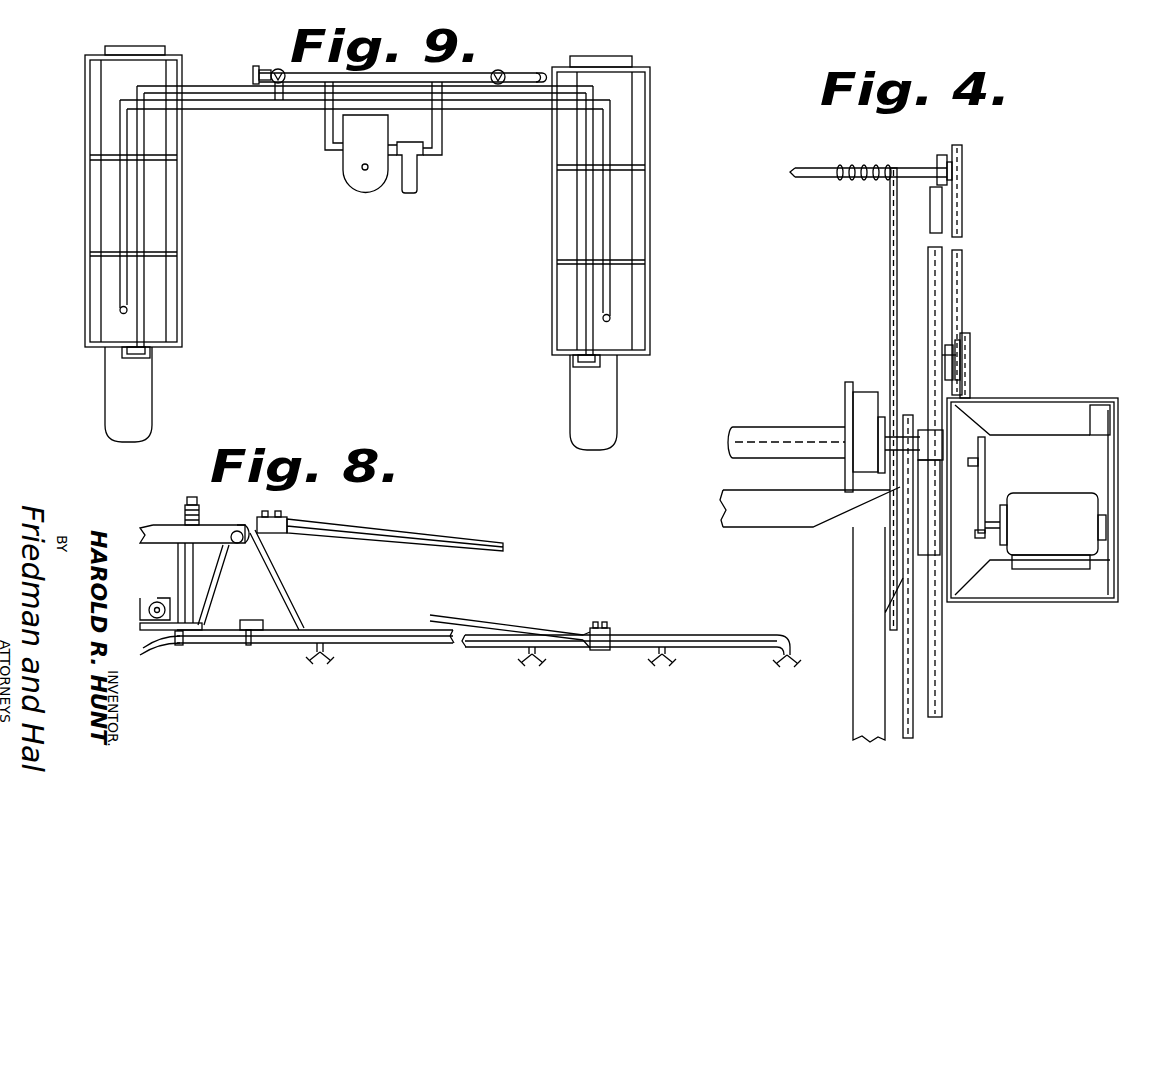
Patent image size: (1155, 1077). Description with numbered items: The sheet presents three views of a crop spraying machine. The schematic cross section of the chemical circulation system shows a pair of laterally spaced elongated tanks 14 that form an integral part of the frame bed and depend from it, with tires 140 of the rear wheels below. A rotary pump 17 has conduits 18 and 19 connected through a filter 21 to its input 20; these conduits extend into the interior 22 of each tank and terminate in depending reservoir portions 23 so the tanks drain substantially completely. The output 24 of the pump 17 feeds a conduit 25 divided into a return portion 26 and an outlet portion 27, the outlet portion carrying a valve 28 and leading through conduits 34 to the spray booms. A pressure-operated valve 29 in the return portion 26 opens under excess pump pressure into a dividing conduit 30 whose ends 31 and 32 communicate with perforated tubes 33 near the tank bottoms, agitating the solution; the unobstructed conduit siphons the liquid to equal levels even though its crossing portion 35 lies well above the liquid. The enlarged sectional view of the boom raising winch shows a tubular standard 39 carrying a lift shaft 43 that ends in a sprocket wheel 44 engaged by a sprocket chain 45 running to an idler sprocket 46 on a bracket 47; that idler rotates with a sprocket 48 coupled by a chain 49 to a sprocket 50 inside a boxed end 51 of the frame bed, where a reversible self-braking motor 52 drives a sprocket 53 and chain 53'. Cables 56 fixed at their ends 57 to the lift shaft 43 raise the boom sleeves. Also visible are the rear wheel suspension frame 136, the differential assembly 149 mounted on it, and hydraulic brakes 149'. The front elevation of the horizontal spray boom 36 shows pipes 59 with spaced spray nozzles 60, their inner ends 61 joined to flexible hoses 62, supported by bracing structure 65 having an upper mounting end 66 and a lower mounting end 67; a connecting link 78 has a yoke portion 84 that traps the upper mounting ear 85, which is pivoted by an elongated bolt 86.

In FIG. 9, the tank 14 is at (85, 218).
In FIG. 9, the rotary pump 17 is at (352, 168).
In FIG. 9, the conduit 18 is at (590, 207).
In FIG. 9, the conduit 19 is at (138, 210).
In FIG. 9, the pump input 20 is at (394, 158).
In FIG. 9, the filter 21 is at (416, 175).
In FIG. 9, the tank interior 22 is at (172, 284).
In FIG. 9, the reservoir portion 23 is at (142, 368).
In FIG. 9, the pump output 24 is at (335, 150).
In FIG. 9, the conduit 25 is at (318, 74).
In FIG. 9, the return portion 26 is at (257, 71).
In FIG. 9, the outlet portion 27 is at (466, 72).
In FIG. 9, the valve 28 is at (525, 72).
In FIG. 9, the pressure-operated valve 29 is at (274, 68).
In FIG. 9, the dividing conduit 30 is at (283, 105).
In FIG. 9, the end of dividing conduit 31 is at (120, 311).
In FIG. 9, the end of dividing conduit 32 is at (608, 318).
In FIG. 9, the perforated tube 33 is at (120, 308).
In FIG. 9, the conduit 34 is at (580, 62).
In FIG. 9, the crossing portion 35 is at (475, 109).
In FIG. 9, the tire 140 is at (105, 422).
In FIG. 4, the lift shaft 43 is at (917, 166).
In FIG. 4, the sprocket wheel 44 is at (962, 170).
In FIG. 4, the sprocket chain 45 is at (962, 270).
In FIG. 4, the idler sprocket 46 is at (950, 345).
In FIG. 4, the bracket 47 is at (945, 412).
In FIG. 4, the sprocket 48 is at (968, 352).
In FIG. 4, the chain 49 is at (965, 335).
In FIG. 4, the sprocket 50 is at (986, 462).
In FIG. 4, the boxed end 51 is at (1070, 405).
In FIG. 4, the motor 52 is at (1050, 505).
In FIG. 4, the sprocket 53 is at (1001, 557).
In FIG. 4, the chain 53' is at (1007, 485).
In FIG. 4, the cable 56 is at (890, 266).
In FIG. 4, the cable end 57 is at (845, 173).
In FIG. 4, the rear wheel suspension frame 136 is at (872, 578).
In FIG. 4, the differential assembly 149 is at (786, 424).
In FIG. 4, the hydraulic brake 149' is at (856, 420).
In FIG. 4, the standard 39 is at (935, 305).
In FIG. 8, the spray boom 36 is at (380, 532).
In FIG. 8, the pipe 59 is at (395, 645).
In FIG. 8, the spray nozzle 60 is at (785, 665).
In FIG. 8, the inner end 61 is at (178, 640).
In FIG. 8, the flexible hose 62 is at (155, 650).
In FIG. 8, the bracing structure 65 is at (283, 588).
In FIG. 8, the upper mounting end 66 is at (278, 512).
In FIG. 8, the lower mounting end 67 is at (160, 595).
In FIG. 8, the connecting link 78 is at (162, 527).
In FIG. 8, the yoke portion 84 is at (230, 535).
In FIG. 8, the upper mounting ear 85 is at (195, 520).
In FIG. 8, the bolt 86 is at (187, 570).